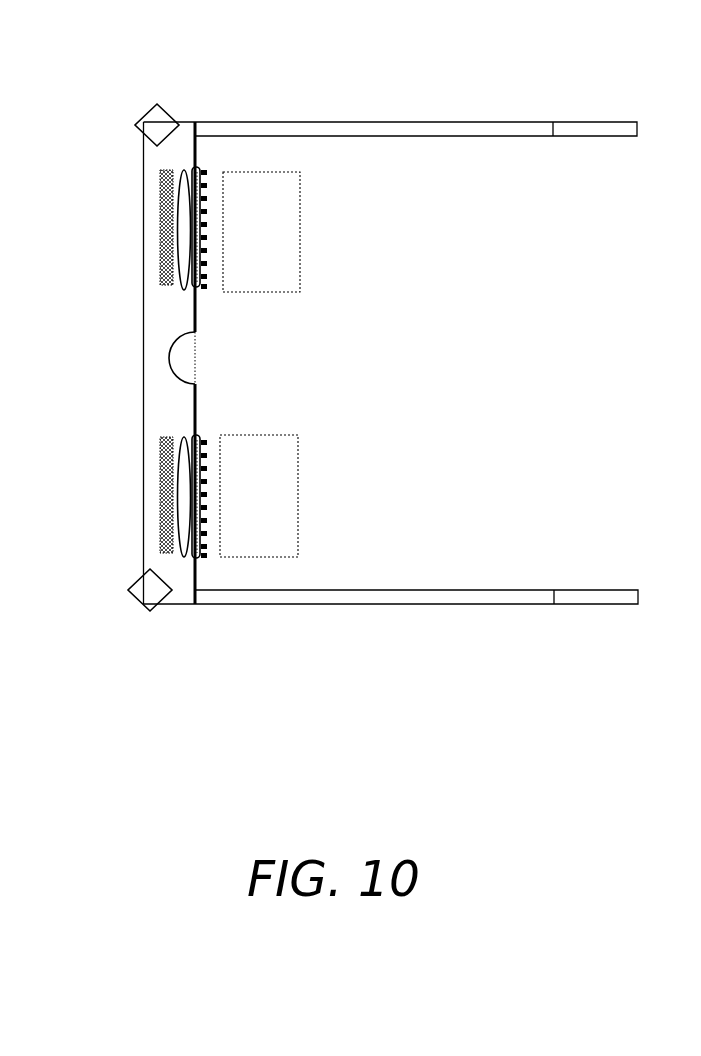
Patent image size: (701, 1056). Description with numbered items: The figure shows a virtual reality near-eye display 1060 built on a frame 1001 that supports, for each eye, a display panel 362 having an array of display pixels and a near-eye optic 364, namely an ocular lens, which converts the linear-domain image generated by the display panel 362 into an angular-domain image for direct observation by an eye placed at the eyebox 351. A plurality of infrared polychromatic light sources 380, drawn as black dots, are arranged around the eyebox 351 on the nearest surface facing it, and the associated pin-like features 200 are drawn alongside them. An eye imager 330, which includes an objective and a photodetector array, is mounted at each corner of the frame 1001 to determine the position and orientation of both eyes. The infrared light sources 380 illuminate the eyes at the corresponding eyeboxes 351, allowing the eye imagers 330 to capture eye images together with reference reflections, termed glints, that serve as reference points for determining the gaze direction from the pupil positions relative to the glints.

The frame 1001 is at (517, 122).
The virtual reality near-eye display 1060 is at (467, 355).
The eye imager 330 is at (140, 121).
The display panel 362 is at (163, 218).
The near-eye optic 364 is at (184, 170).
The infrared polychromatic light source 380 is at (206, 284).
The connector pins 200 is at (200, 167).
The eyebox 351 is at (280, 244).